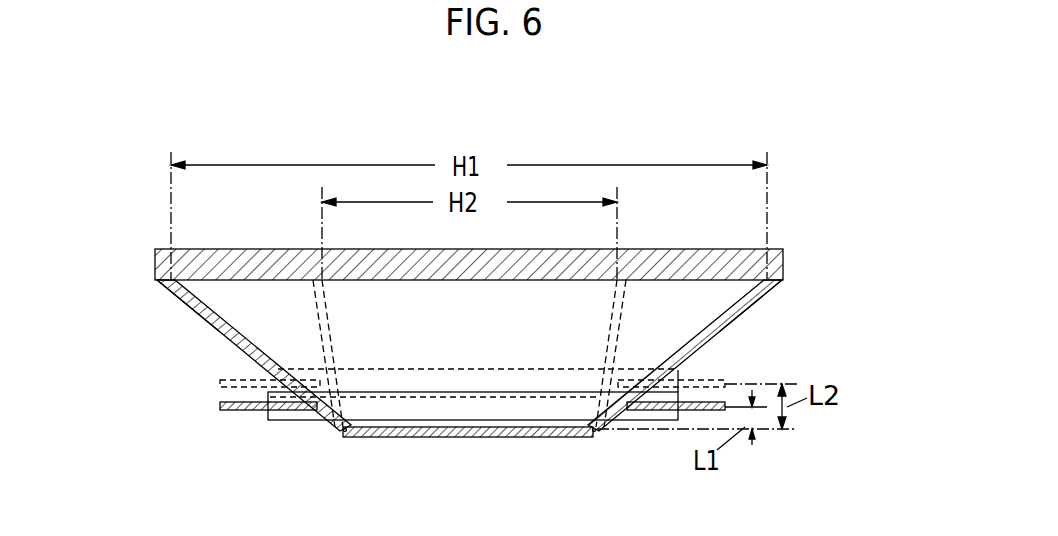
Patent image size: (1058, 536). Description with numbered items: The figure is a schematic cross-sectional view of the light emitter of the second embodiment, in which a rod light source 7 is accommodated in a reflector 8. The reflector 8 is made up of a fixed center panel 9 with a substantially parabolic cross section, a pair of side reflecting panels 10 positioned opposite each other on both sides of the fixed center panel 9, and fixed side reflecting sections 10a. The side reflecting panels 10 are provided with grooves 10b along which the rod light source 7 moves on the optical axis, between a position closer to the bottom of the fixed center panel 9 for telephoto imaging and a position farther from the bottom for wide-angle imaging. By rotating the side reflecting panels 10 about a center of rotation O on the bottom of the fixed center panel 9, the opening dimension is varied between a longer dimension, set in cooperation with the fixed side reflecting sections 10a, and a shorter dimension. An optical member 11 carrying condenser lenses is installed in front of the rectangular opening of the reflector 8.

The rod light source 7 is at (628, 422).
The reflector 8 is at (278, 325).
The fixed center panel 9 is at (482, 438).
The side reflecting panels 10 is at (240, 352).
The fixed side reflecting sections 10a is at (185, 307).
The grooves 10b is at (278, 367).
The optical member 11 is at (784, 262).
The center of rotation O is at (347, 432).